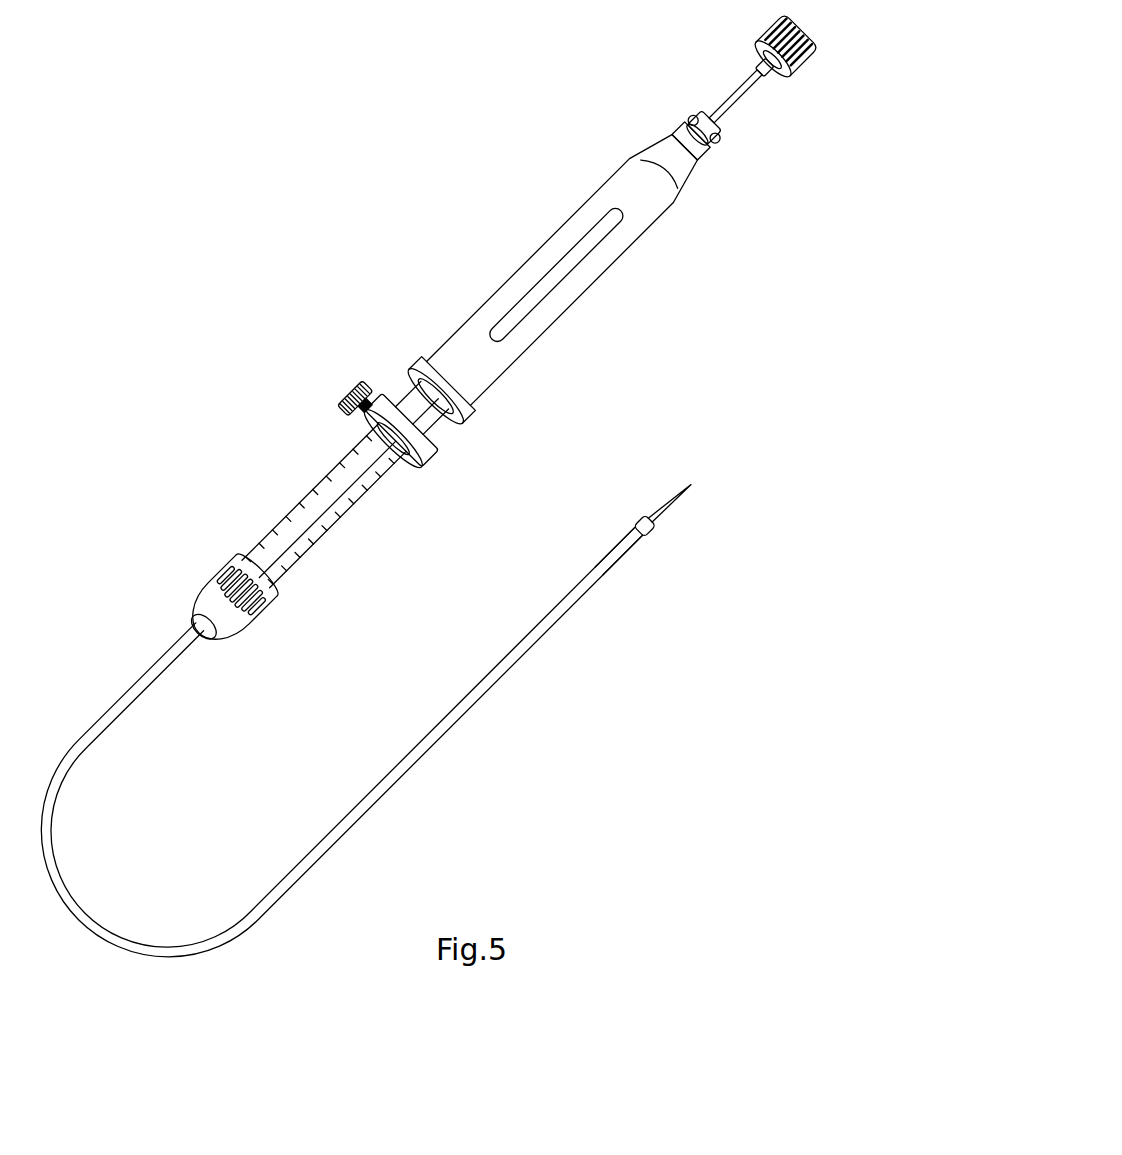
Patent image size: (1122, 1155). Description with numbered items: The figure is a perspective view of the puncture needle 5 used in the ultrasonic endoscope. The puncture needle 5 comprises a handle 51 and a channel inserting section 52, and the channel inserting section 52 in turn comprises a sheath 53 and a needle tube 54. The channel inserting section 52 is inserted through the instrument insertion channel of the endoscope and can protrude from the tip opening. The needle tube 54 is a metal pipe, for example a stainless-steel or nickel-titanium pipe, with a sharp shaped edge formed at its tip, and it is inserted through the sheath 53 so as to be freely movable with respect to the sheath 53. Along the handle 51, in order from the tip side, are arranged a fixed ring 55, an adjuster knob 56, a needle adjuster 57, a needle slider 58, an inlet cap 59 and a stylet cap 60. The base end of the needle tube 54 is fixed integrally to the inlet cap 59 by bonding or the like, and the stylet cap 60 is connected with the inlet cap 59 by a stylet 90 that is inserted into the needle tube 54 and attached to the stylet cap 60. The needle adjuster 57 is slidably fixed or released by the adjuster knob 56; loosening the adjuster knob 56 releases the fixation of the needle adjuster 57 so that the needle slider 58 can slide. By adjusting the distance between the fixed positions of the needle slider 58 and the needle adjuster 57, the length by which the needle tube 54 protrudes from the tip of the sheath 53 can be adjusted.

The puncture needle 5 is at (322, 132).
The handle 51 is at (133, 604).
The channel inserting section 52 is at (629, 511).
The sheath 53 is at (614, 562).
The needle tube 54 is at (677, 503).
The fixed ring 55 is at (210, 597).
The adjuster knob 56 is at (353, 390).
The needle adjuster 57 is at (398, 395).
The needle slider 58 is at (574, 211).
The inlet cap 59 is at (712, 155).
The stylet cap 60 is at (808, 74).
The stylet 90 is at (727, 97).